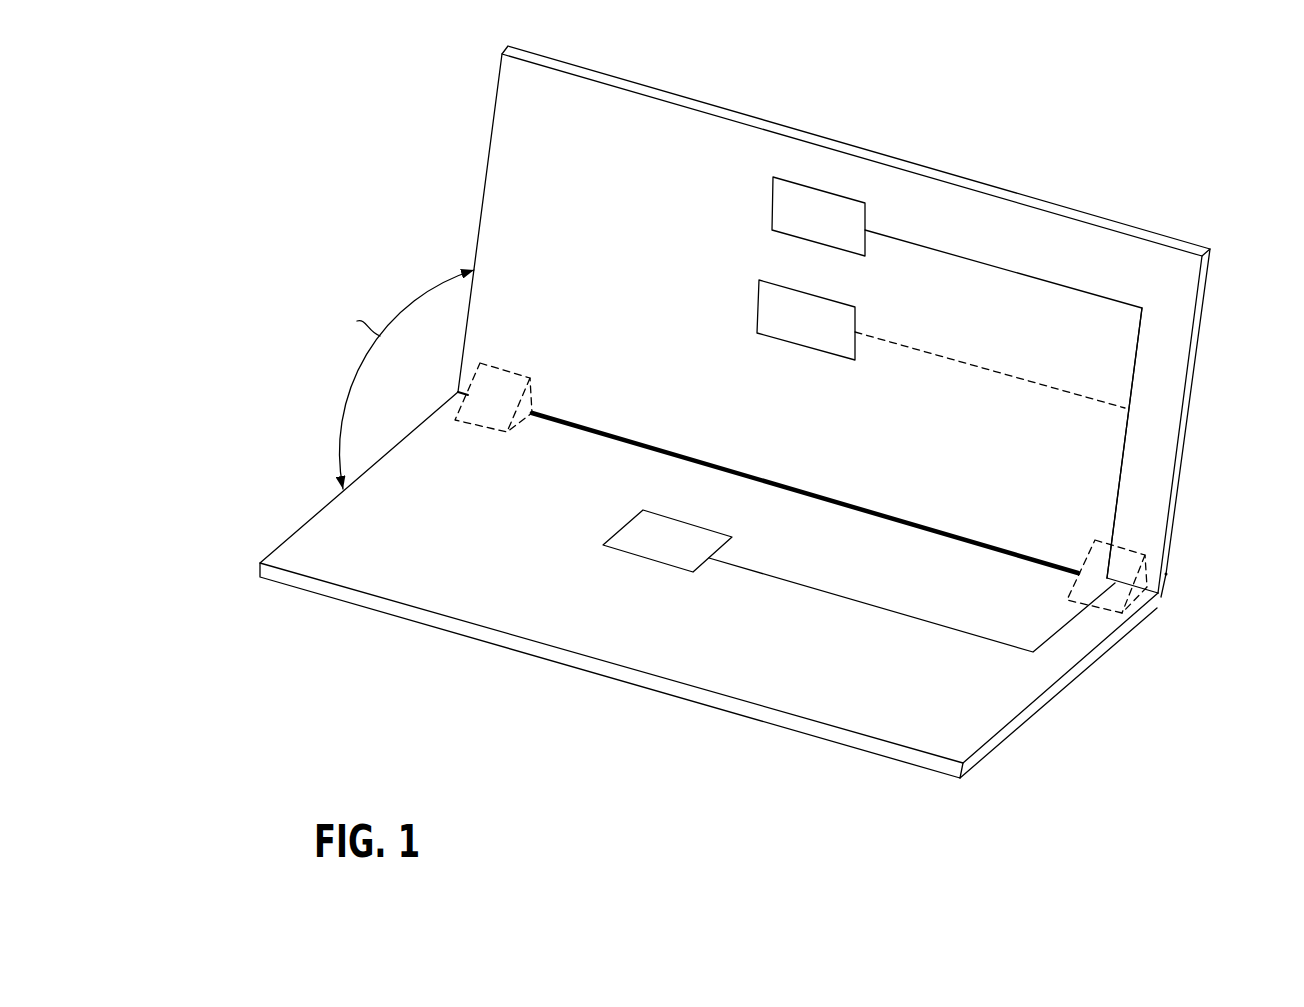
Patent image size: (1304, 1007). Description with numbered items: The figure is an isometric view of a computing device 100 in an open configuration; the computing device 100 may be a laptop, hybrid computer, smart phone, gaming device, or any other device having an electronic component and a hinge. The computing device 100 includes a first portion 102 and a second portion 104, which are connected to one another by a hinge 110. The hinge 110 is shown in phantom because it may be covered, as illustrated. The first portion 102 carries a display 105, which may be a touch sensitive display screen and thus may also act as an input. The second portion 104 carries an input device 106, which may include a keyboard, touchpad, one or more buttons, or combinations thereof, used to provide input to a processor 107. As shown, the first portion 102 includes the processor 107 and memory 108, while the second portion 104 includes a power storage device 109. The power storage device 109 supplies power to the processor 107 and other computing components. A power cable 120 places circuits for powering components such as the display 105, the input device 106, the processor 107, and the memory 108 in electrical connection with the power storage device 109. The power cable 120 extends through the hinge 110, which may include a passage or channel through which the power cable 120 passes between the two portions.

The computing device 100 is at (252, 392).
The first portion 102 is at (459, 122).
The second portion 104 is at (292, 521).
The display 105 is at (952, 404).
The input device 106 is at (877, 605).
The processor 107 is at (818, 216).
The memory 108 is at (941, 344).
The power storage device 109 is at (636, 556).
The hinge 110 is at (501, 361).
The power cable 120 is at (1120, 464).